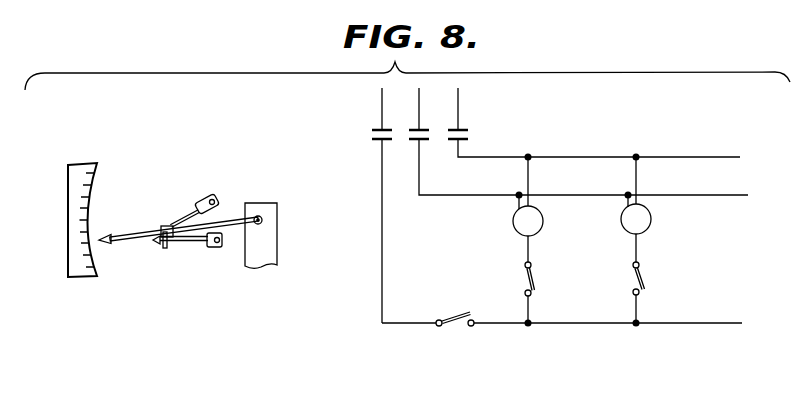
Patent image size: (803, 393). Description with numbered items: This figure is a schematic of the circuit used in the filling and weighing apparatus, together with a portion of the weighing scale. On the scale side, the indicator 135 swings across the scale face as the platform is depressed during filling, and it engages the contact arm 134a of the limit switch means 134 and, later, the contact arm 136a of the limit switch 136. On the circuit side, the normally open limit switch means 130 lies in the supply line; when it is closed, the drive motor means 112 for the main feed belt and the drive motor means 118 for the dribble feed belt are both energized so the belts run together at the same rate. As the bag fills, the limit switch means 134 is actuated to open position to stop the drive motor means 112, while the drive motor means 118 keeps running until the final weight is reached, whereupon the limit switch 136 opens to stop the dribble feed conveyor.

The drive motor means 112 is at (513, 221).
The drive motor means 118 is at (651, 219).
The limit switch means 130 is at (458, 318).
The limit switch means 134 is at (218, 196).
The contact arm 134a is at (191, 212).
The indicator 135 is at (110, 243).
The limit switch 136 is at (220, 248).
The contact arm 136a is at (185, 243).